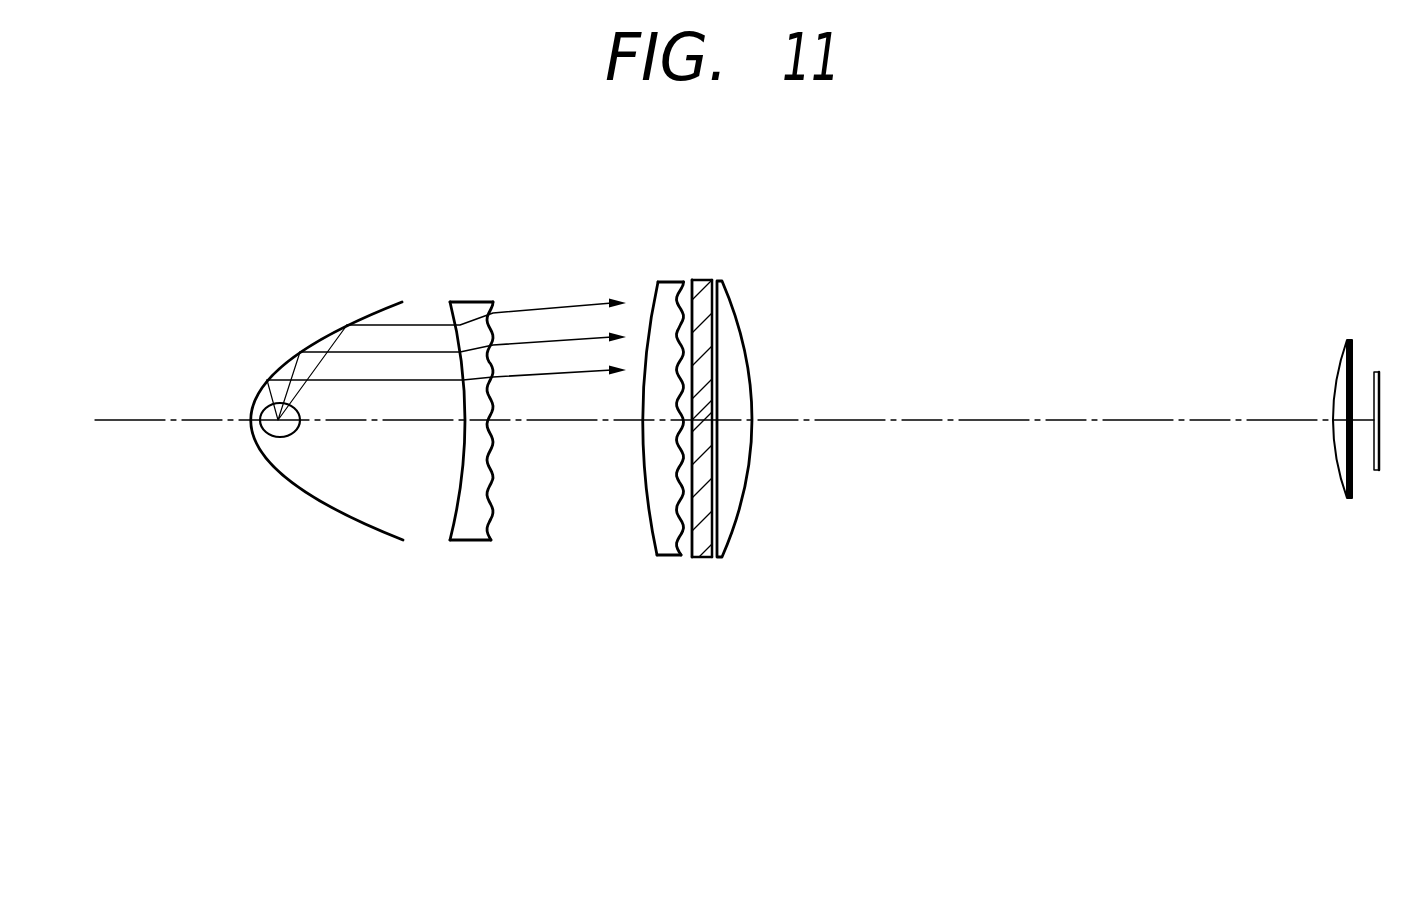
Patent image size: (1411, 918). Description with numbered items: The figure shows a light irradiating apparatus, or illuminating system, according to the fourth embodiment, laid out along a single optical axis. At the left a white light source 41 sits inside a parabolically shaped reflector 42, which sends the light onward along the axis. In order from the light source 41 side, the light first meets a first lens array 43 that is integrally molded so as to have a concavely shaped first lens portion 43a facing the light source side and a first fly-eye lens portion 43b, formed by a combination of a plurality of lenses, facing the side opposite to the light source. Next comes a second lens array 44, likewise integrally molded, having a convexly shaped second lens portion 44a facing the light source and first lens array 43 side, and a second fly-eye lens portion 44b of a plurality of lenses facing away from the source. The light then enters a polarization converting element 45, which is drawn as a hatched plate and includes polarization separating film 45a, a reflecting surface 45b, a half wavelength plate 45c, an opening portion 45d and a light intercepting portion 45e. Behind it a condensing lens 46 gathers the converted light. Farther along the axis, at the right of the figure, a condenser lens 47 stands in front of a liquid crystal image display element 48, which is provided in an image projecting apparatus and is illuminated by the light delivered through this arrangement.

The white light source 41 is at (263, 440).
The parabolically shaped reflector 42 is at (387, 302).
The first lens array 43 is at (457, 349).
The first lens portion 43a is at (450, 300).
The first fly-eye lens portion 43b is at (498, 378).
The second lens array 44 is at (630, 348).
The second lens portion 44a is at (653, 297).
The second fly-eye lens portion 44b is at (663, 370).
The polarization converting element 45 is at (691, 359).
The polarization separating film 45a is at (697, 403).
The reflecting surface 45b is at (705, 417).
The half wavelength plate 45c is at (712, 400).
The opening portion 45d is at (712, 308).
The light intercepting portion 45e is at (688, 310).
The condensing lens 46 is at (733, 316).
The condenser lens 47 is at (1350, 338).
The liquid crystal image display element 48 is at (1377, 372).